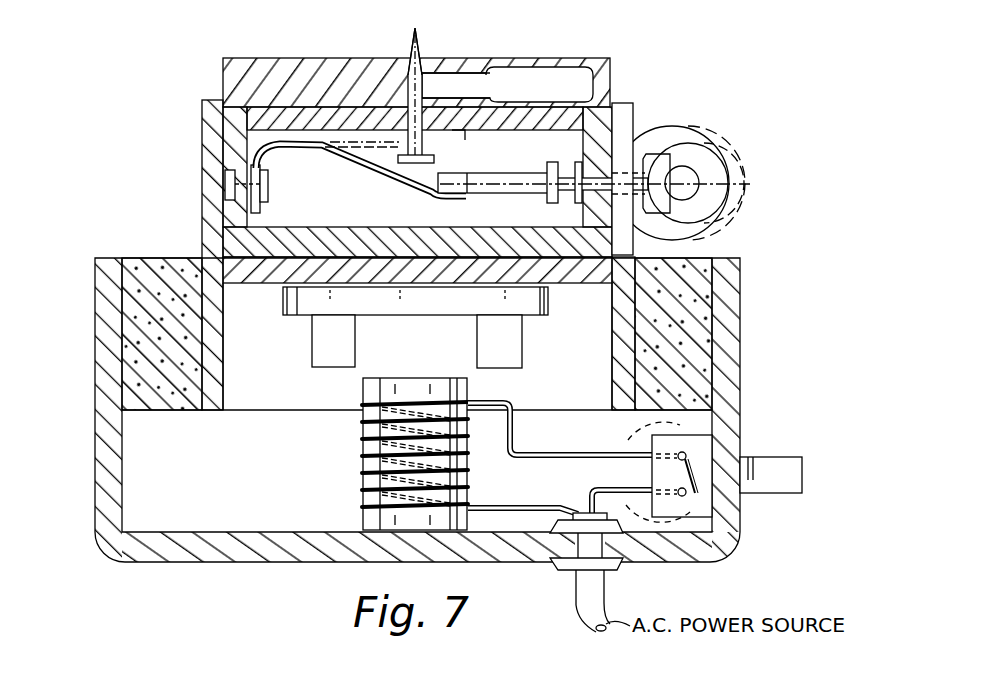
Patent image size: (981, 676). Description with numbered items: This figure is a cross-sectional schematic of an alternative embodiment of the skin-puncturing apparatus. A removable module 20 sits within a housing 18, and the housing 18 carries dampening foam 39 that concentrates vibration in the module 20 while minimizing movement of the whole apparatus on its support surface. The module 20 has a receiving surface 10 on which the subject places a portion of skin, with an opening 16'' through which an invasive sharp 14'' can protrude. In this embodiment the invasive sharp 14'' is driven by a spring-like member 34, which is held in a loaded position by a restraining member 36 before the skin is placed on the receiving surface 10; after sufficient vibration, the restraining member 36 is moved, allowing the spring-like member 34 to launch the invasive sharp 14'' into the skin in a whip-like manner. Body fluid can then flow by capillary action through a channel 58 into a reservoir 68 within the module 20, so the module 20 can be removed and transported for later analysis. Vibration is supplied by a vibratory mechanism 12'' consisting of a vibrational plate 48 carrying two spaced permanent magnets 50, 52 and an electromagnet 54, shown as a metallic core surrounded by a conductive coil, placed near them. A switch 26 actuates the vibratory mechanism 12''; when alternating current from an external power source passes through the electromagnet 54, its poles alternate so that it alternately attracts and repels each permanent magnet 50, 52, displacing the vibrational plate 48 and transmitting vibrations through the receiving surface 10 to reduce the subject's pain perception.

The receiving surface 10 is at (298, 57).
The vibratory mechanism 12'' is at (381, 454).
The invasive sharp 14'' is at (404, 89).
The opening 16'' is at (449, 45).
The housing 18 is at (95, 254).
The removable module 20 is at (222, 70).
The switch 26 is at (787, 457).
The spring-like member 34 is at (400, 177).
The restraining member 36 is at (520, 178).
The dampening foam 39 is at (157, 257).
The vibrational plate 48 is at (548, 308).
The permanent magnet 50 is at (317, 353).
The permanent magnet 52 is at (517, 355).
The electromagnet 54 is at (368, 517).
The channel 58 is at (480, 66).
The reservoir 68 is at (573, 80).